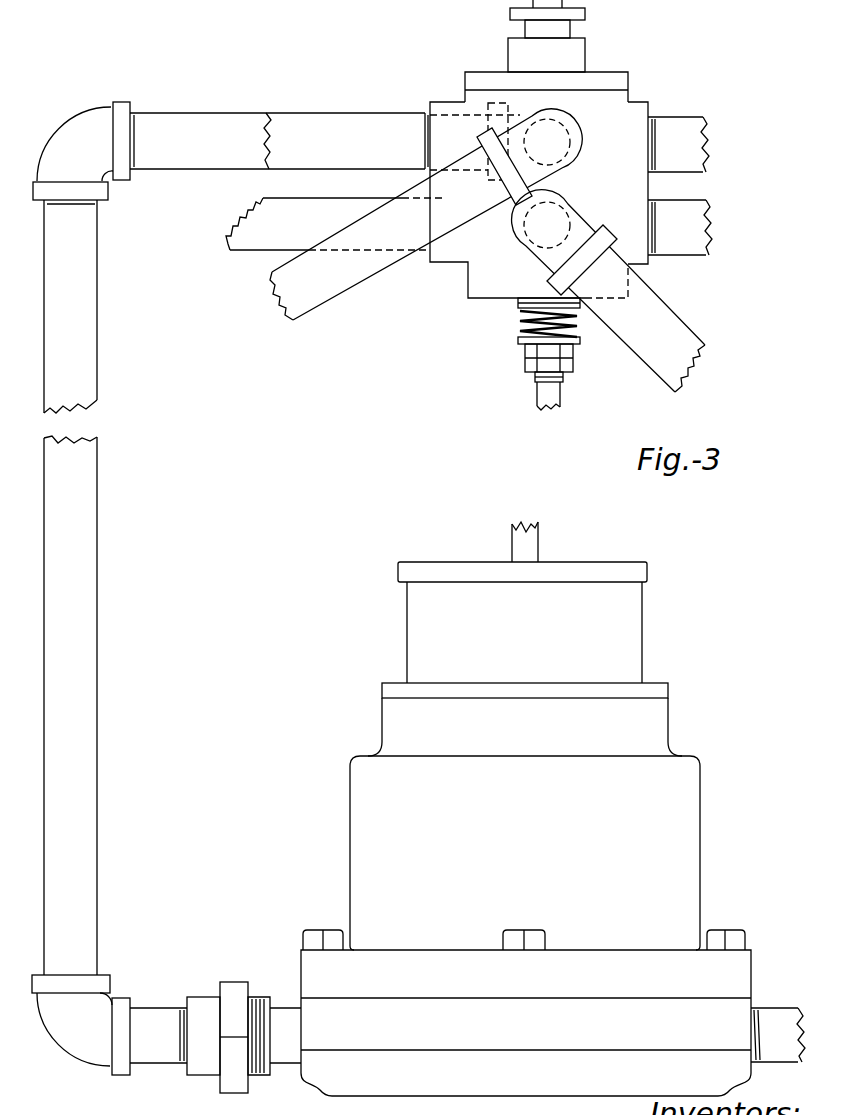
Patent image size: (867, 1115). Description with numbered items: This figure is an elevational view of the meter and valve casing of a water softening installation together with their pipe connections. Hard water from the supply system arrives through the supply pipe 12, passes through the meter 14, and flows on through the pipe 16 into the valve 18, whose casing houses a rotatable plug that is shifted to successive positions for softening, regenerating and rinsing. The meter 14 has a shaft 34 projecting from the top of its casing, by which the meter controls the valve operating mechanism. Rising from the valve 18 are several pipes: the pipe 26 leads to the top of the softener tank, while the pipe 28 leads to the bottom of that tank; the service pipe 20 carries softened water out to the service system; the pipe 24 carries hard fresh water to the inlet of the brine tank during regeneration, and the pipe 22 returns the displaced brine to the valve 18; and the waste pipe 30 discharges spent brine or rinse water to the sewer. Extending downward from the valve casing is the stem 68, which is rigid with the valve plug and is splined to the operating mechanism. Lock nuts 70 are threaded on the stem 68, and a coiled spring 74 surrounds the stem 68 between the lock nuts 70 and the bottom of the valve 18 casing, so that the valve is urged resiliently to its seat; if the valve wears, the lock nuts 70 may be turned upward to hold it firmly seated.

The supply pipe 12 is at (770, 1000).
The meter 14 is at (683, 862).
The pipe 16 is at (83, 520).
The valve 18 is at (633, 116).
The service pipe 20 is at (700, 240).
The pipe 22 is at (690, 146).
The pipe 24 is at (663, 326).
The pipe 26 is at (365, 128).
The pipe 28 is at (335, 295).
The waste pipe 30 is at (265, 243).
The meter shaft 34 is at (537, 536).
The stem 68 is at (550, 400).
The lock nuts 70 is at (527, 348).
The coiled spring 74 is at (518, 330).